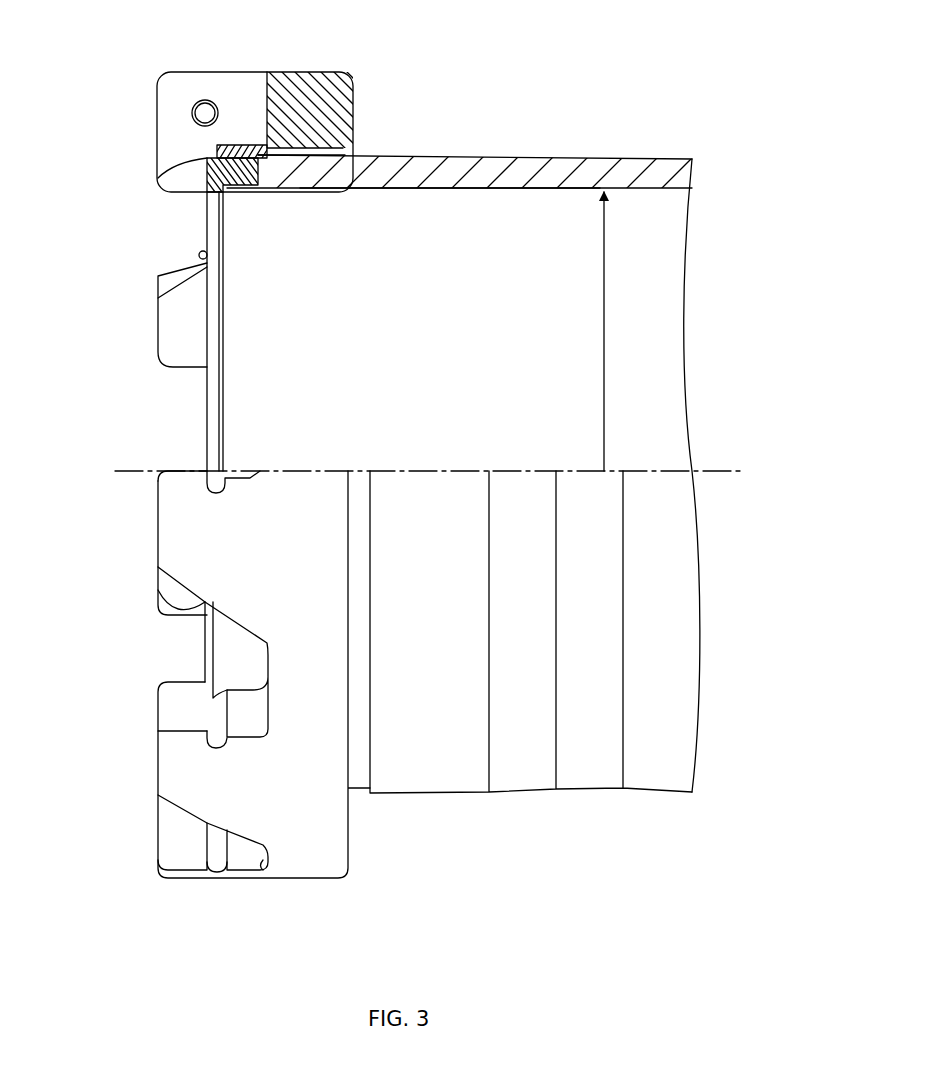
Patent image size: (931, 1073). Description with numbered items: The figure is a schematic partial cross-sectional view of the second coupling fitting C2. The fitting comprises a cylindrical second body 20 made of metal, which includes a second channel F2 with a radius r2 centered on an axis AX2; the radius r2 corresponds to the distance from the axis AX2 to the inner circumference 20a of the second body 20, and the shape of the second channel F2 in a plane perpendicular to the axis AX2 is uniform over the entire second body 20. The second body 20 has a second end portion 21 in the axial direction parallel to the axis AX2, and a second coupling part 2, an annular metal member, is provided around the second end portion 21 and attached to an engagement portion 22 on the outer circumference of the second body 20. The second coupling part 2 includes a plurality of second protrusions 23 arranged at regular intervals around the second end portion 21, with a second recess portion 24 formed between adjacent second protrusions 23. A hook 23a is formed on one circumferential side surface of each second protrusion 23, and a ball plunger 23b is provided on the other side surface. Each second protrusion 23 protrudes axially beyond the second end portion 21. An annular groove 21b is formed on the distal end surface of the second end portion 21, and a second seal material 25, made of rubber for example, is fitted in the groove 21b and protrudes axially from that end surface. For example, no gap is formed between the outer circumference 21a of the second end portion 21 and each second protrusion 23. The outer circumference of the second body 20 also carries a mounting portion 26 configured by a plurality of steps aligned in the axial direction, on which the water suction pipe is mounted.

The second coupling part 2 is at (227, 898).
The second body 20 is at (452, 155).
The inner circumference 20a is at (467, 190).
The second end portion 21 is at (204, 157).
The outer circumference 21a is at (235, 145).
The groove 21b is at (247, 188).
The engagement portion 22 is at (318, 164).
The second protrusion 23 is at (156, 117).
The hook 23a is at (208, 470).
The ball plunger 23b is at (203, 108).
The second recess portion 24 is at (266, 94).
The second seal material 25 is at (205, 209).
The mounting portion 26 is at (597, 800).
The axis AX2 is at (454, 473).
The second coupling fitting C2 is at (614, 96).
The second channel F2 is at (651, 294).
The radius r2 is at (590, 331).